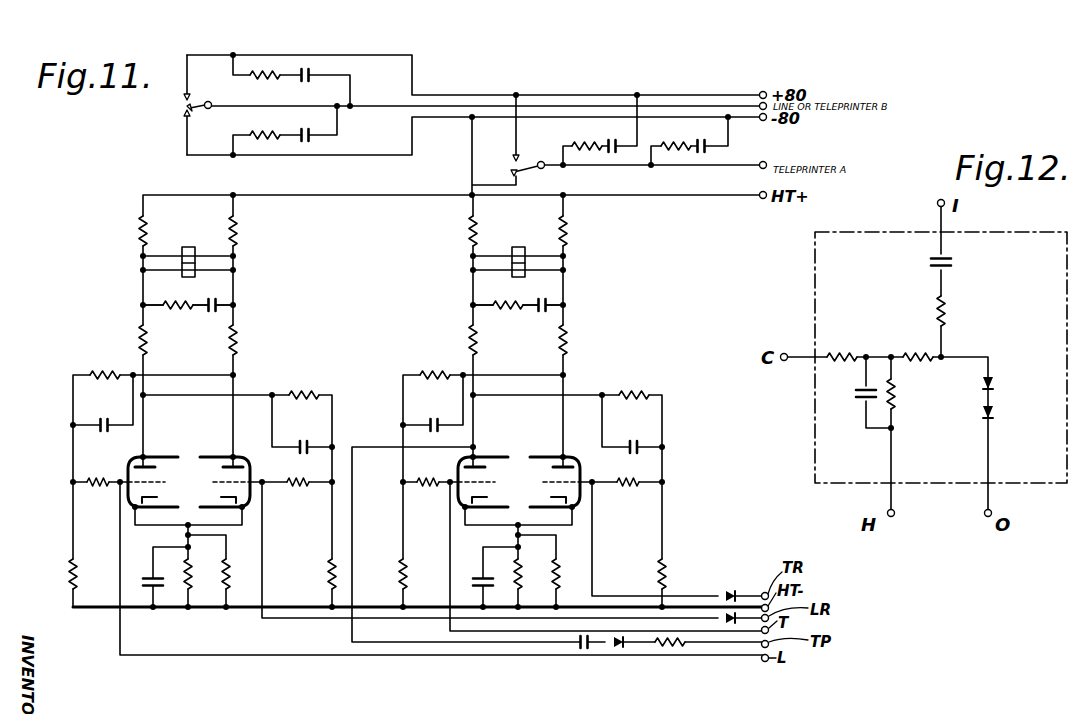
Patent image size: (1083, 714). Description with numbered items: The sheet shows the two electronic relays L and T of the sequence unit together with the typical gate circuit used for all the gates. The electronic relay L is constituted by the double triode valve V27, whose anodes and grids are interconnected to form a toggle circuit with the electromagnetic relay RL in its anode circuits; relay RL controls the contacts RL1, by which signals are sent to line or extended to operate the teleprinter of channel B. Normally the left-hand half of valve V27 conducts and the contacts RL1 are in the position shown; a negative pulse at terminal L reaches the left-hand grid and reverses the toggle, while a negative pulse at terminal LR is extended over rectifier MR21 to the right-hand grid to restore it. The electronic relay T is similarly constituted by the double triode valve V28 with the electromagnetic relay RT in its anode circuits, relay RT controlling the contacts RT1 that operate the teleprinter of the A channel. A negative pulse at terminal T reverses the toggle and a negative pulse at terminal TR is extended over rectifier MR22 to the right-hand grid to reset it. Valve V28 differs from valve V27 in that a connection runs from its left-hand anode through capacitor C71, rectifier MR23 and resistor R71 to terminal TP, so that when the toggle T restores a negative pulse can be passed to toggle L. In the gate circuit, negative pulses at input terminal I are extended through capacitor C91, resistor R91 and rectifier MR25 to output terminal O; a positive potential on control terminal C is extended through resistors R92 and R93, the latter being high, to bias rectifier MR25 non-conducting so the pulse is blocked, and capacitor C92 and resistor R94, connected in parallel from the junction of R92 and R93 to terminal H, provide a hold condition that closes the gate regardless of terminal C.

In FIG. 11, the relay contacts RL1 is at (174, 105).
In FIG. 11, the relay contacts RT1 is at (533, 159).
In FIG. 11, the electromagnetic relay RL is at (183, 251).
In FIG. 11, the electromagnetic relay RT is at (513, 251).
In FIG. 11, the electronic relay L is at (203, 295).
In FIG. 11, the electronic relay T is at (500, 295).
In FIG. 11, the double triode valve V27 is at (189, 469).
In FIG. 11, the double triode valve V28 is at (519, 469).
In FIG. 11, the capacitor C71 is at (578, 640).
In FIG. 11, the resistor R71 is at (648, 640).
In FIG. 11, the rectifier MR21 is at (722, 617).
In FIG. 11, the rectifier MR22 is at (723, 587).
In FIG. 11, the rectifier MR23 is at (610, 640).
In FIG. 12, the capacitor C91 is at (962, 263).
In FIG. 12, the resistor R91 is at (963, 311).
In FIG. 12, the resistor R92 is at (848, 346).
In FIG. 12, the resistor R93 is at (917, 346).
In FIG. 12, the capacitor C92 is at (848, 393).
In FIG. 12, the resistor R94 is at (912, 394).
In FIG. 12, the rectifier MR25 is at (1016, 397).